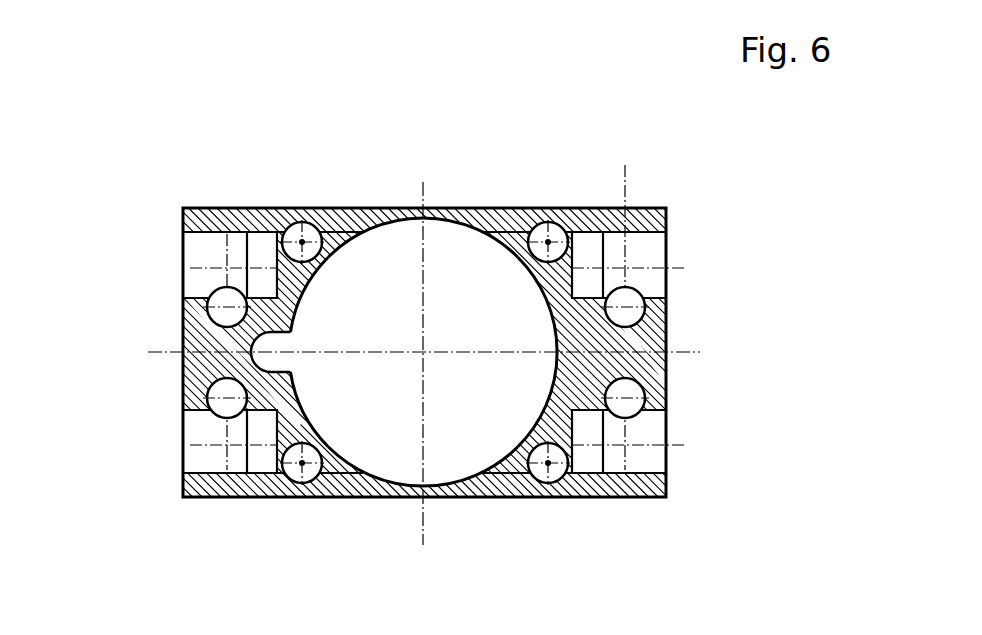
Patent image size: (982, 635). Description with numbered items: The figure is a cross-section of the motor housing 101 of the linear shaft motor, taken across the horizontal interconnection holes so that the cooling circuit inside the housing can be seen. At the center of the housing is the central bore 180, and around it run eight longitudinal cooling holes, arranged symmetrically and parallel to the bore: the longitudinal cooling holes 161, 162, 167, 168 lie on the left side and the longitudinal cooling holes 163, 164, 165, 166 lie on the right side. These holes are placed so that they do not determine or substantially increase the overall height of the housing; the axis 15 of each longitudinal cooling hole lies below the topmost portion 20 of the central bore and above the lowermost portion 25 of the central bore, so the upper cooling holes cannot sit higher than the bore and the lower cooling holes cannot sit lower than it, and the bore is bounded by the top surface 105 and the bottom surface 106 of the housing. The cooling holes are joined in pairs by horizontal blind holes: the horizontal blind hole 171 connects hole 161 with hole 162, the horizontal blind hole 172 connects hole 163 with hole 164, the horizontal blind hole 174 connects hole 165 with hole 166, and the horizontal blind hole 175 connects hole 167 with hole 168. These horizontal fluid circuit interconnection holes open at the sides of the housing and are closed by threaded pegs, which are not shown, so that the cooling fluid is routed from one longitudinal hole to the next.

The motor housing 101 is at (234, 100).
The axis of longitudinal cooling holes 15 is at (303, 241).
The topmost portion of the central bore 20 is at (417, 218).
The lowermost portion of the central bore 25 is at (422, 487).
The top surface of the motor housing 105 is at (424, 218).
The bottom surface of the motor housing 106 is at (425, 486).
The central bore 180 is at (488, 337).
The longitudinal cooling hole 161 is at (212, 320).
The longitudinal cooling hole 162 is at (288, 228).
The longitudinal cooling hole 163 is at (557, 229).
The longitudinal cooling hole 164 is at (647, 308).
The longitudinal cooling hole 165 is at (640, 385).
The longitudinal cooling hole 166 is at (561, 477).
The longitudinal cooling hole 167 is at (288, 478).
The longitudinal cooling hole 168 is at (212, 385).
The horizontal blind hole 171 is at (188, 270).
The horizontal blind hole 172 is at (666, 278).
The horizontal blind hole 174 is at (667, 432).
The horizontal blind hole 175 is at (190, 444).